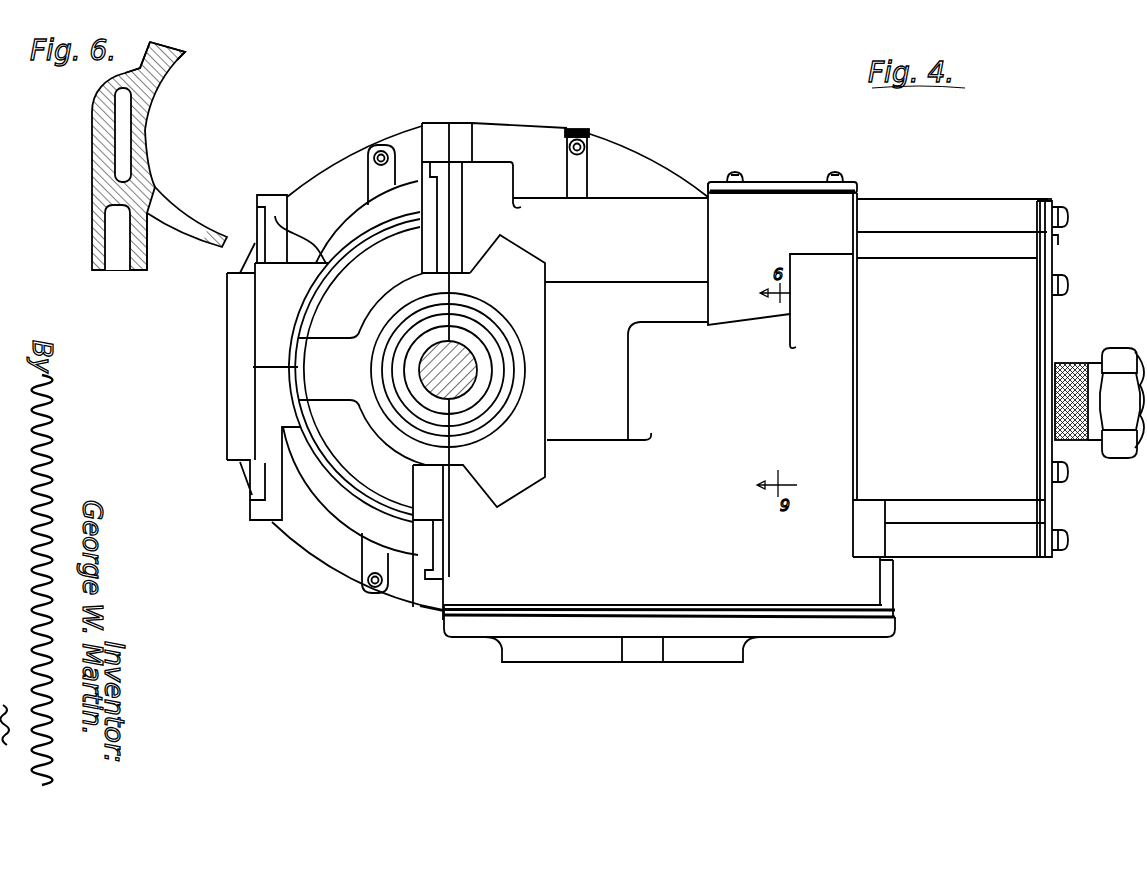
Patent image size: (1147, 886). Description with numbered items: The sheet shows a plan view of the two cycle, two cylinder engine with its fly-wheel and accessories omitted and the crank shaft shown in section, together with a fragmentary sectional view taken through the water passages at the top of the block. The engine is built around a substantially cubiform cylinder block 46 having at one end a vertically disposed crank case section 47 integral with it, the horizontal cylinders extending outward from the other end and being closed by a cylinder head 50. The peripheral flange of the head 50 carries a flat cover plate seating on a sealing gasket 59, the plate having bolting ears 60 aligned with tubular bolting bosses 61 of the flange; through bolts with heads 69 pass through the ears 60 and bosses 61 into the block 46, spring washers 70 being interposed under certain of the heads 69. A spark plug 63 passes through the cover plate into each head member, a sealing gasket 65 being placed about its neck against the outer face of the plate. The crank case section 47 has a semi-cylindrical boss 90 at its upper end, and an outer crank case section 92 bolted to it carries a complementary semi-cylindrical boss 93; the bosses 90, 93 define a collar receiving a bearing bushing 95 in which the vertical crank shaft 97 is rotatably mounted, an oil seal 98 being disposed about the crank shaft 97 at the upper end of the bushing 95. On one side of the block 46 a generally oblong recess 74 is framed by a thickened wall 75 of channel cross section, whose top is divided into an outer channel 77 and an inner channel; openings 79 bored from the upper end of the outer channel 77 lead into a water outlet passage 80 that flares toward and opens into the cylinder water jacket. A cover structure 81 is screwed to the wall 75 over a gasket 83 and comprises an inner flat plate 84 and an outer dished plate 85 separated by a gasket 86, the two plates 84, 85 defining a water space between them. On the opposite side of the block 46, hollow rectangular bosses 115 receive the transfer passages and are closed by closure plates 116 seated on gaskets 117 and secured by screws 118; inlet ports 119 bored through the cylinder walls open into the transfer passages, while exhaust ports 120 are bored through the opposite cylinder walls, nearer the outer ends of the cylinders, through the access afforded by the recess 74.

In FIG. 4, the cylinder block 46 is at (637, 216).
In FIG. 4, the crank case section 47 is at (630, 162).
In FIG. 4, the cylinder head 50 is at (1020, 325).
In FIG. 4, the sealing gasket 59 is at (1033, 213).
In FIG. 4, the bolting ears 60 is at (1049, 204).
In FIG. 4, the bolting bosses 61 is at (922, 260).
In FIG. 4, the spark plug 63 is at (1117, 357).
In FIG. 4, the sealing gasket 65 is at (1063, 363).
In FIG. 4, the bolt heads 69 is at (1070, 223).
In FIG. 4, the spring washers 70 is at (1058, 246).
In FIG. 6, the recess 74 is at (147, 242).
In FIG. 6, the thickened wall 75 is at (92, 247).
In FIG. 6, the outer channel 77 is at (120, 263).
In FIG. 6, the openings 79 is at (100, 187).
In FIG. 6, the water outlet passage 80 is at (117, 135).
In FIG. 4, the cover structure 81 is at (815, 645).
In FIG. 4, the gasket 83 is at (552, 606).
In FIG. 4, the inner flat plate 84 is at (624, 613).
In FIG. 4, the outer plate 85 is at (717, 632).
In FIG. 4, the gasket 86 is at (480, 614).
In FIG. 4, the semi-cylindrical boss 90 is at (533, 275).
In FIG. 4, the outer crank case section 92 is at (312, 186).
In FIG. 4, the semi-cylindrical boss 93 is at (383, 304).
In FIG. 4, the bearing bushing 95 is at (485, 372).
In FIG. 4, the crank shaft 97 is at (465, 362).
In FIG. 4, the oil seal 98 is at (502, 392).
In FIG. 4, the hollow rectangular bosses 115 is at (797, 217).
In FIG. 4, the closure plates 116 is at (770, 184).
In FIG. 4, the gaskets 117 is at (803, 190).
In FIG. 6, the screws 118 is at (137, 102).
In FIG. 4, the screws 118 is at (735, 172).
In FIG. 6, the inlet ports 119 is at (168, 70).
In FIG. 6, the exhaust ports 120 is at (182, 230).